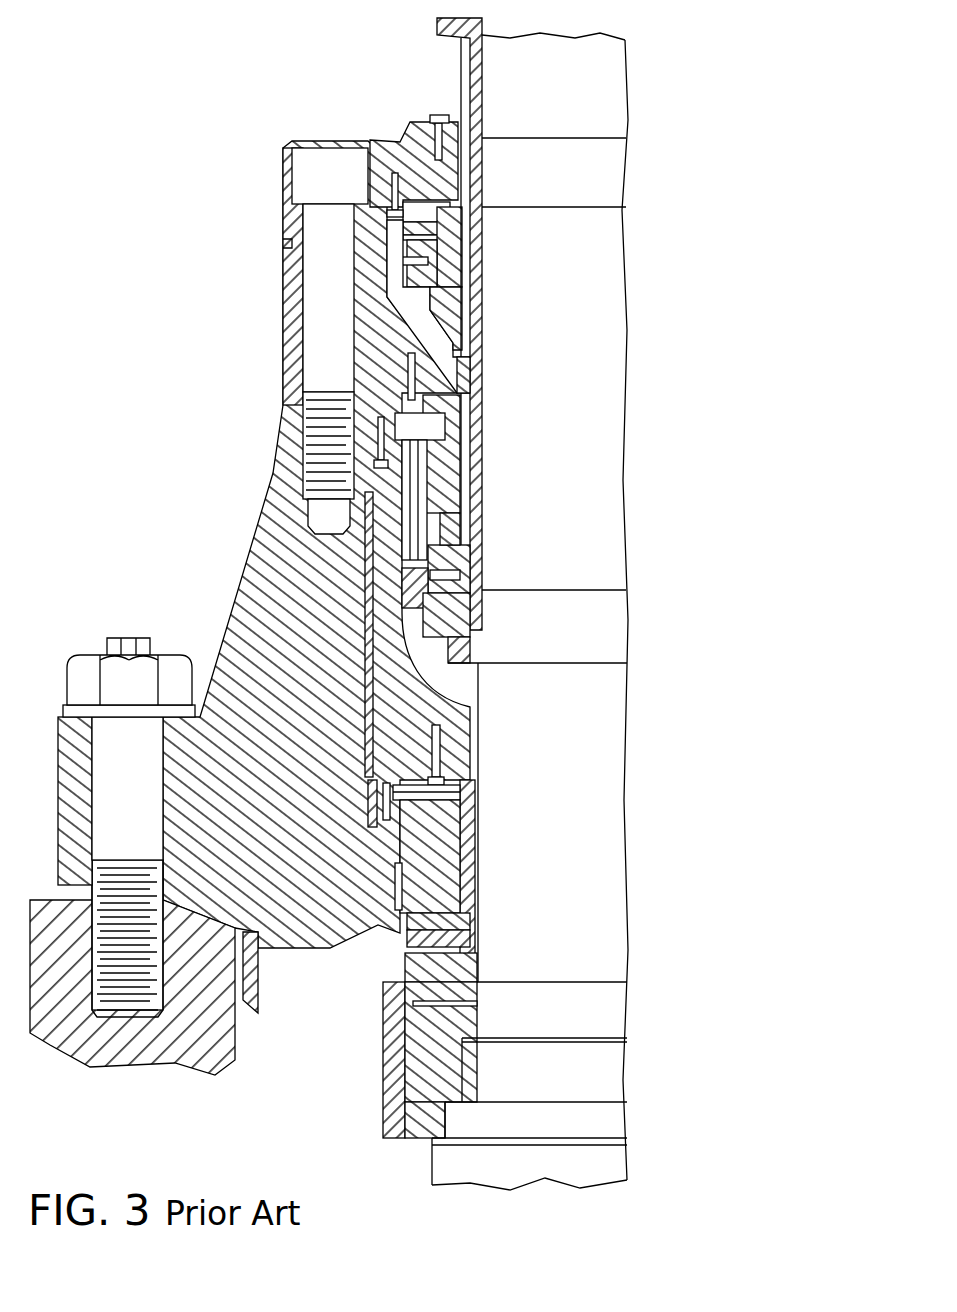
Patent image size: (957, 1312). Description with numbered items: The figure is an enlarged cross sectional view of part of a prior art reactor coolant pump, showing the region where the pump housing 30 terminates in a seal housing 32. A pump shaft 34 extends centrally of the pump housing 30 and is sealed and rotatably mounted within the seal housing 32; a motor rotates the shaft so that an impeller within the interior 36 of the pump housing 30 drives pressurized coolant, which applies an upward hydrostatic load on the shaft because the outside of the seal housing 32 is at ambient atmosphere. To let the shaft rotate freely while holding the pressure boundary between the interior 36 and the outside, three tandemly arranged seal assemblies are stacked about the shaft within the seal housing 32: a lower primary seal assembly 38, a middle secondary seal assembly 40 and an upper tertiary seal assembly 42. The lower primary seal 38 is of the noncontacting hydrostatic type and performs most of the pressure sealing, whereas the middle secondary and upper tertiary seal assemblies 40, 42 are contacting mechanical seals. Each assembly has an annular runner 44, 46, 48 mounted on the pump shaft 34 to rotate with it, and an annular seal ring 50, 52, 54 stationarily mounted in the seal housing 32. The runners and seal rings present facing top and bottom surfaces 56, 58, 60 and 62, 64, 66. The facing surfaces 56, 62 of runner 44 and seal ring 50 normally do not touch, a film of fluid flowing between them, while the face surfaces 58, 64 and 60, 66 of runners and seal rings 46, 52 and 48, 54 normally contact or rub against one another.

The pump housing 30 is at (90, 1067).
The seal housing 32 is at (240, 628).
The pump shaft 34 is at (612, 90).
The interior 36 is at (334, 1066).
The lower primary seal assembly 38 is at (484, 900).
The middle secondary seal assembly 40 is at (489, 528).
The upper tertiary seal assembly 42 is at (487, 233).
The annular runner 44 is at (477, 967).
The annular runner 46 is at (460, 612).
The annular runner 48 is at (464, 317).
The annular seal ring 50 is at (475, 882).
The annular seal ring 52 is at (485, 535).
The annular seal ring 54 is at (462, 258).
The top surface 56 is at (467, 938).
The top surface 58 is at (480, 555).
The top surface 60 is at (462, 287).
The bottom surface 62 is at (477, 930).
The bottom surface 64 is at (470, 548).
The bottom surface 66 is at (432, 291).